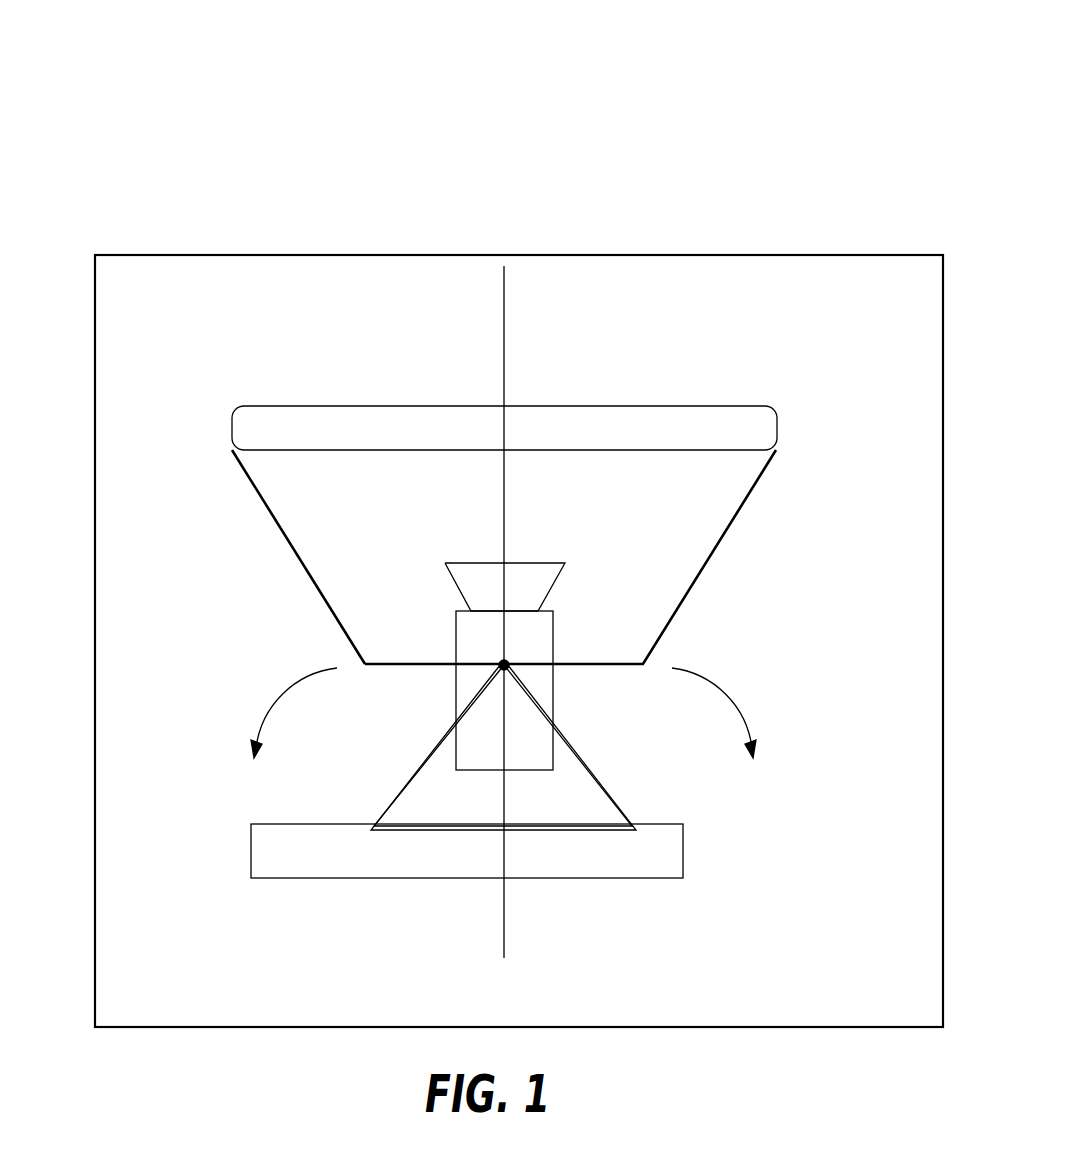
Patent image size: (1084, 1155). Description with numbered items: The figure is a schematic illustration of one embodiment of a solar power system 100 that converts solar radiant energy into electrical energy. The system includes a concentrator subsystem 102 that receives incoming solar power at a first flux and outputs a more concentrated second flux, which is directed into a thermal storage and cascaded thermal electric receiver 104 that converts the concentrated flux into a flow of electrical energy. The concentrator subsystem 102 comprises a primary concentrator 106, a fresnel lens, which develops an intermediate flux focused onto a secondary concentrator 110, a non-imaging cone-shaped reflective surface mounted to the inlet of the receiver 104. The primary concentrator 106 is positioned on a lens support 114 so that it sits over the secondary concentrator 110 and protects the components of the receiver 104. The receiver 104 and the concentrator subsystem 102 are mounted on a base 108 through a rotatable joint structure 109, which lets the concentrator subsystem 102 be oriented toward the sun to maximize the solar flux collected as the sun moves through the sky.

The solar power system 100 is at (519, 535).
The concentrator subsystem 102 is at (593, 604).
The thermal storage and cascaded thermal electric receiver 104 is at (553, 636).
The primary concentrator 106 is at (667, 432).
The base 108 is at (308, 855).
The rotatable joint structure 109 is at (400, 783).
The secondary concentrator 110 is at (533, 563).
The lens support 114 is at (280, 527).